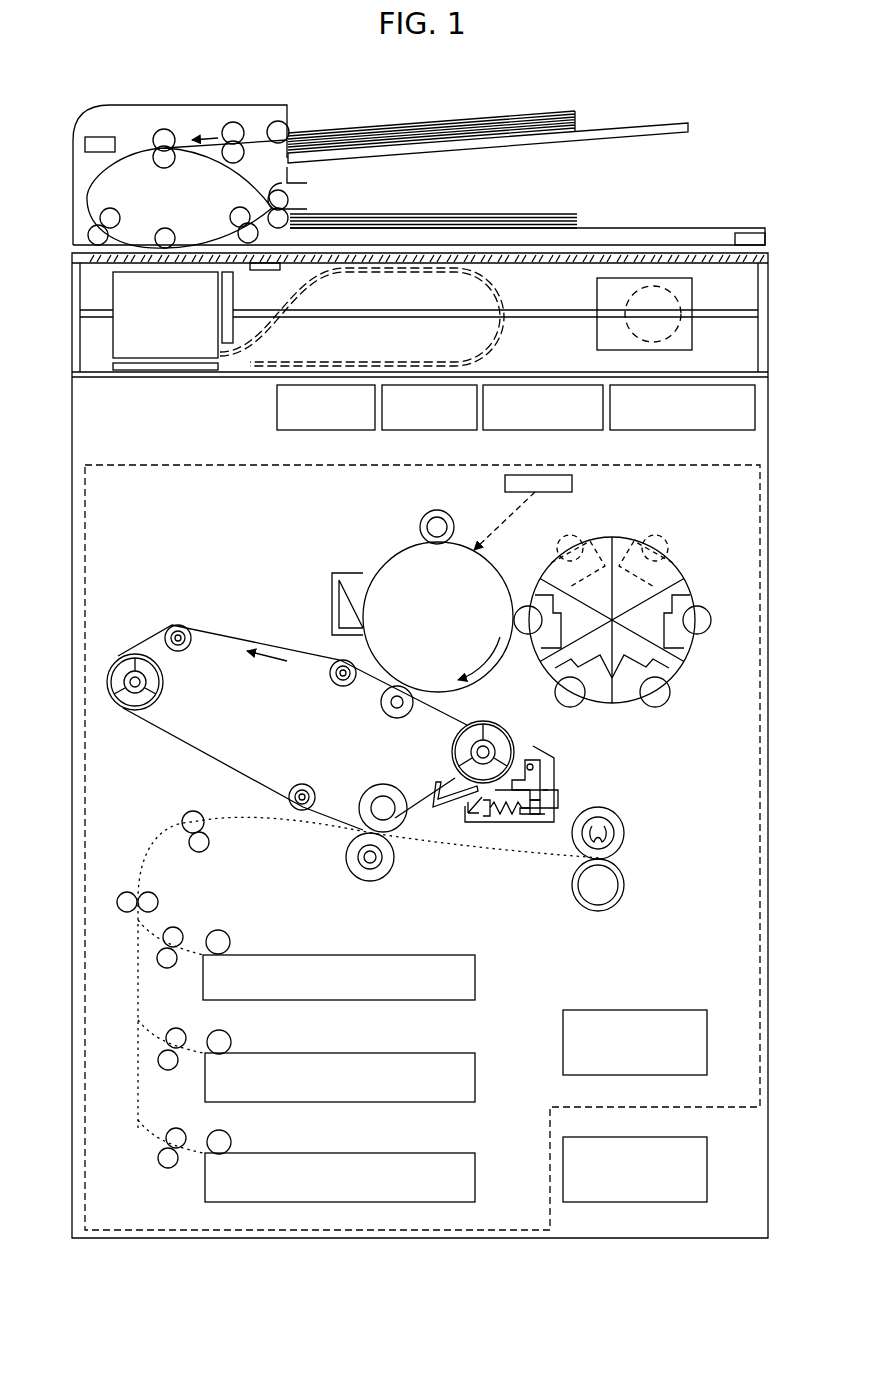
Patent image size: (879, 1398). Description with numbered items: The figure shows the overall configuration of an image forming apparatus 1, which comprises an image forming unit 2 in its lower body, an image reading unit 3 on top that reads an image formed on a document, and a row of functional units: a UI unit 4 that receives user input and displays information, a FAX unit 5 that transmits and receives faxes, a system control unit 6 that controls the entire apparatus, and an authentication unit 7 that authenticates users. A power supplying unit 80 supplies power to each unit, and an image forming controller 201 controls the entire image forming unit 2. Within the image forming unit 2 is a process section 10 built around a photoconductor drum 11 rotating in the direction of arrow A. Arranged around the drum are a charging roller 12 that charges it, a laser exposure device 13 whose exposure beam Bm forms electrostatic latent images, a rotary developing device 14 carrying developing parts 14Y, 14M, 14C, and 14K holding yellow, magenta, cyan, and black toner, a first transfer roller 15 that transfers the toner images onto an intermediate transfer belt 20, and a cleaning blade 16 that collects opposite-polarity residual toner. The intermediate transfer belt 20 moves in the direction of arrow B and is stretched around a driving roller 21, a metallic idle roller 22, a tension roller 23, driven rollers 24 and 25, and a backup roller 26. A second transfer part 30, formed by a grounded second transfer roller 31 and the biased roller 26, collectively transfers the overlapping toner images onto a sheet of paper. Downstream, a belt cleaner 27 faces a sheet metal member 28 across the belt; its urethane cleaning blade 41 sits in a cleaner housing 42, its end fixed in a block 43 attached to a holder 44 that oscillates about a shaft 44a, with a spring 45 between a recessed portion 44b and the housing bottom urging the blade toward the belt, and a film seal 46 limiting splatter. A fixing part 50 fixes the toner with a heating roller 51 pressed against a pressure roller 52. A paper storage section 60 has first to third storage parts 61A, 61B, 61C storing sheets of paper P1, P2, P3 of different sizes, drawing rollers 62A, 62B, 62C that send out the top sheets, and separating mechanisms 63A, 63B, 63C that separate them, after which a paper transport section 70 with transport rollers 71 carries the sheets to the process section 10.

The image forming apparatus 1 is at (410, 106).
The image forming unit 2 is at (162, 464).
The image reading unit 3 is at (690, 170).
The user interface (UI) unit 4 is at (330, 432).
The facsimile (FAX) unit 5 is at (434, 432).
The system control unit 6 is at (548, 432).
The authentication unit 7 is at (690, 432).
The process section 10 is at (280, 548).
The photoconductor drum 11 is at (390, 563).
The charging roller 12 is at (450, 515).
The laser exposure device 13 is at (573, 484).
The exposure beam Bm is at (540, 498).
The rotary developing device 14 is at (690, 560).
The developing part 14Y is at (540, 590).
The developing part 14M is at (555, 680).
The developing part 14C is at (628, 716).
The developing part 14K is at (685, 590).
The first transfer roller 15 is at (404, 716).
The cleaning blade 16 is at (332, 603).
The intermediate transfer belt 20 is at (150, 656).
The driving roller 21 is at (492, 746).
The idle roller 22 is at (332, 680).
The tension roller 23 is at (190, 650).
The driven roller 24 is at (163, 686).
The driven roller 25 is at (292, 788).
The backup roller 26 is at (362, 790).
The belt cleaner 27 is at (556, 744).
The sheet metal member 28 is at (432, 793).
The second transfer part 30 is at (345, 810).
The second transfer roller 31 is at (350, 856).
The cleaning blade 41 is at (508, 780).
The cleaner housing 42 is at (558, 762).
The block 43 is at (546, 790).
The holder 44 is at (562, 800).
The shaft 44a is at (548, 757).
The recessed portion 44b is at (538, 822).
The spring 45 is at (508, 816).
The film seal 46 is at (464, 819).
The fixing part 50 is at (626, 818).
The heating roller 51 is at (625, 835).
The pressure roller 52 is at (625, 885).
The paper storage section 60 is at (477, 922).
The first storage part 61A is at (476, 962).
The second storage part 61B is at (476, 1062).
The third storage part 61C is at (476, 1162).
The drawing roller 62A is at (231, 942).
The drawing roller 62B is at (232, 1042).
The drawing roller 62C is at (232, 1142).
The separating mechanism 63A is at (184, 936).
The separating mechanism 63B is at (178, 1028).
The separating mechanism 63C is at (178, 1128).
The paper transport section 70 is at (152, 826).
The transport rollers 71 is at (210, 842).
The power supplying unit 80 is at (709, 1168).
The image forming controller 201 is at (707, 1042).
The arrow A is at (479, 658).
The arrow B is at (267, 668).
The sheet of paper P1 is at (413, 923).
The sheet of paper P2 is at (413, 1023).
The sheet of paper P3 is at (413, 1123).